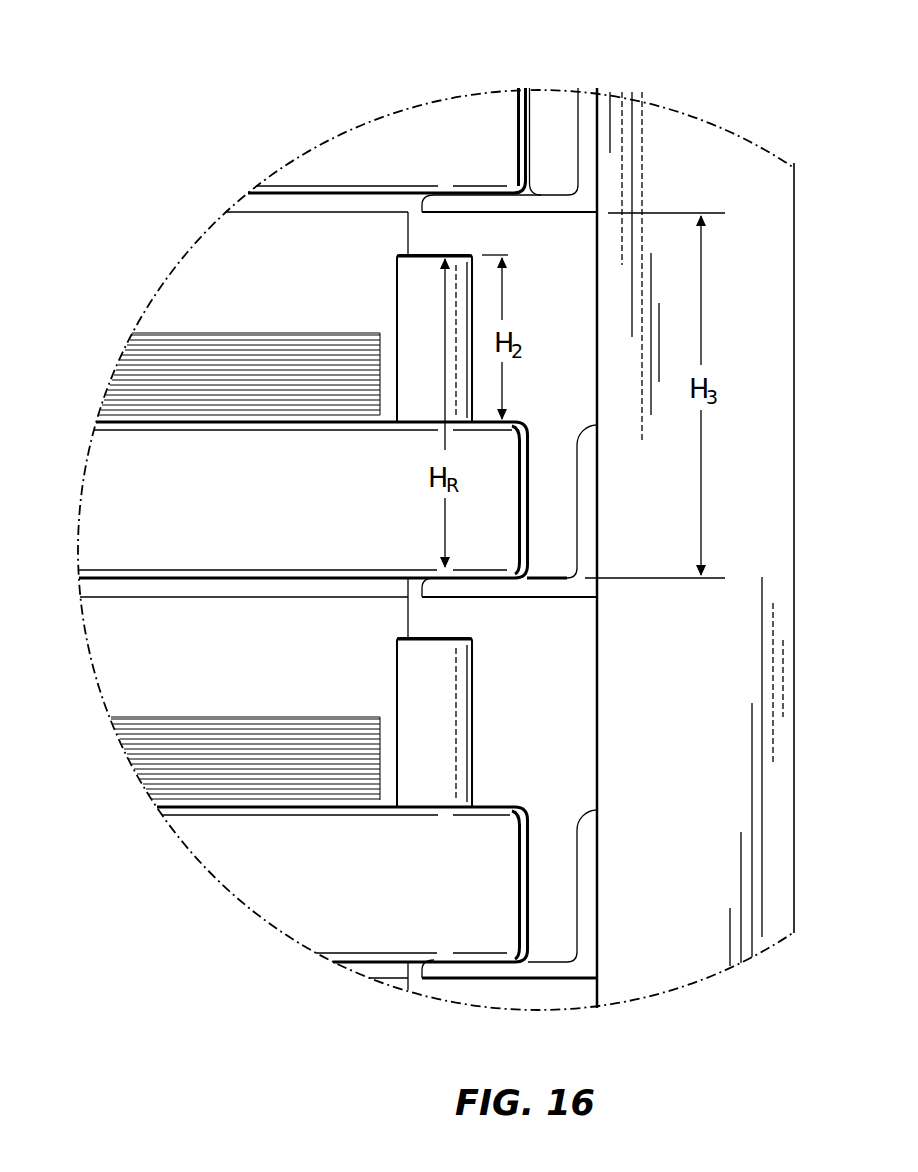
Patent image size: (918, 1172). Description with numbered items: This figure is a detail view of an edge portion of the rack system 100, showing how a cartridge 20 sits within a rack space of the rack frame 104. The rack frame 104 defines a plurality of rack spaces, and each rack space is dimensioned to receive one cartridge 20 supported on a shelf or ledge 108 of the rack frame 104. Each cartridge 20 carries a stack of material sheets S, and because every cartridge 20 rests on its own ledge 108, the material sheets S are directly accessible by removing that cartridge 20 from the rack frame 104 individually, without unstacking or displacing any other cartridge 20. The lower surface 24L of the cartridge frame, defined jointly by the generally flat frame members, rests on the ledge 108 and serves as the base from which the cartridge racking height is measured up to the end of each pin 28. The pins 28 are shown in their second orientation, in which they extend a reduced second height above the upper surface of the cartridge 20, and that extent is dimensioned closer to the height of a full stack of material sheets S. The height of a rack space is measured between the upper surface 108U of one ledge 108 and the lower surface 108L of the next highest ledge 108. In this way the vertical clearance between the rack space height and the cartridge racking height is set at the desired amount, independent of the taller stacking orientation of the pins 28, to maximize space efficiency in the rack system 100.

The rack system 100 is at (169, 217).
The cartridge 20 is at (388, 148).
The material sheets S is at (177, 347).
The pin 28 is at (397, 290).
The lower surface 24L is at (248, 586).
The ledge 108 is at (542, 207).
The lower surface of ledge 108L is at (509, 224).
The upper surface of ledge 108U is at (547, 566).
The rack frame 104 is at (665, 148).